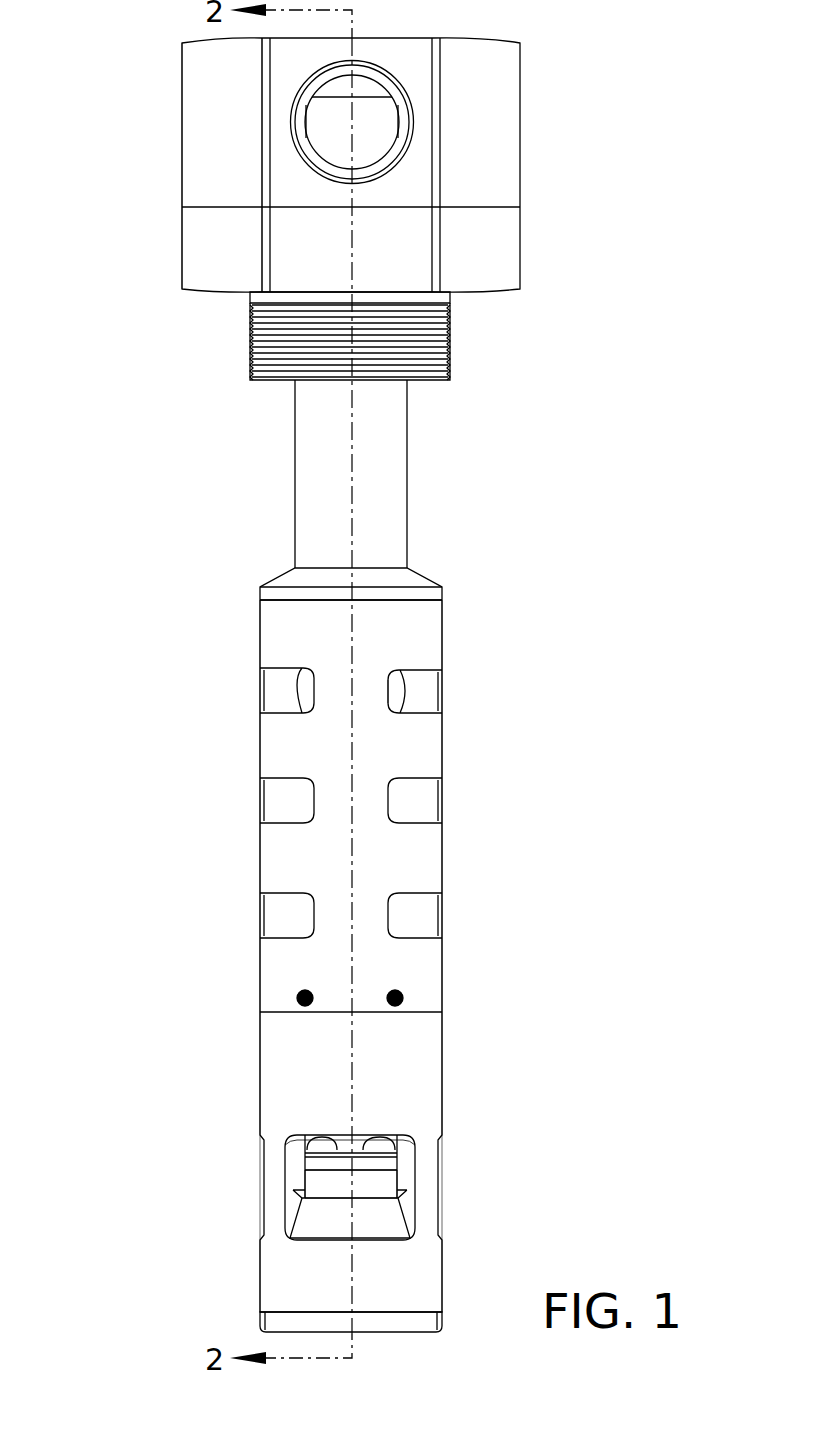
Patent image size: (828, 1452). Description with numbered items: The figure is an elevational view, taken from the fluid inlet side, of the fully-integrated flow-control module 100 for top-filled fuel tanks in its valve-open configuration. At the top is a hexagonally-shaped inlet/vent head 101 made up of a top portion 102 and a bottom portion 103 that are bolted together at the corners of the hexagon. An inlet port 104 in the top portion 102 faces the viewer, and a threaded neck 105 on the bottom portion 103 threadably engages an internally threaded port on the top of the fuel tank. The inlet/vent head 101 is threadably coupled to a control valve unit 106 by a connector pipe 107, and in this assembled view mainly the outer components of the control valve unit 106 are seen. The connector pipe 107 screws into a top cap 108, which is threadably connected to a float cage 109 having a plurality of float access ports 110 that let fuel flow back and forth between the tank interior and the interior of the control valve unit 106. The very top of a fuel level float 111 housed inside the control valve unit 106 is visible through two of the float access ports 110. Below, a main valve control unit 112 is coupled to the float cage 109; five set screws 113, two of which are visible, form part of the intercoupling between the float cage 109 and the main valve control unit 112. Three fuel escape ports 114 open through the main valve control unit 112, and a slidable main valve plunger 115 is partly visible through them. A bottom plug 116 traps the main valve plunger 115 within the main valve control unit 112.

The flow-control module 100 is at (525, 475).
The inlet/vent head 101 is at (530, 176).
The top portion 102 is at (218, 129).
The bottom portion 103 is at (218, 243).
The inlet port 104 is at (400, 103).
The threaded neck 105 is at (455, 337).
The control valve unit 106 is at (480, 870).
The connector pipe 107 is at (325, 482).
The top cap 108 is at (292, 581).
The float cage 109 is at (288, 752).
The float access ports 110 is at (258, 690).
The fuel level float 111 is at (417, 710).
The main valve control unit 112 is at (290, 1085).
The set screws 113 is at (297, 993).
The fuel escape ports 114 is at (400, 1132).
The main valve plunger 115 is at (320, 1185).
The bottom plug 116 is at (390, 1318).